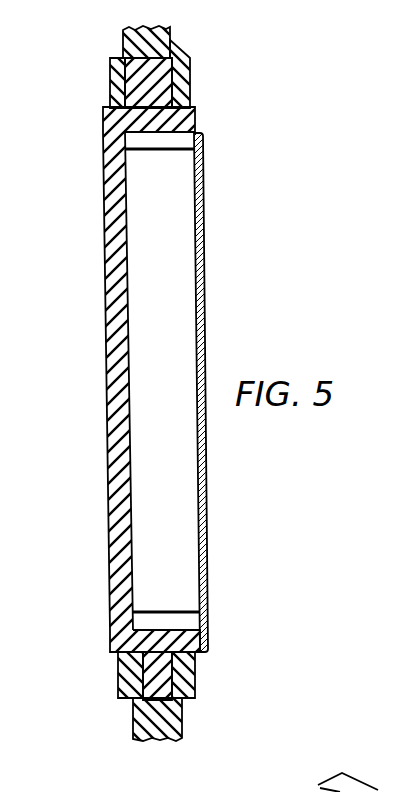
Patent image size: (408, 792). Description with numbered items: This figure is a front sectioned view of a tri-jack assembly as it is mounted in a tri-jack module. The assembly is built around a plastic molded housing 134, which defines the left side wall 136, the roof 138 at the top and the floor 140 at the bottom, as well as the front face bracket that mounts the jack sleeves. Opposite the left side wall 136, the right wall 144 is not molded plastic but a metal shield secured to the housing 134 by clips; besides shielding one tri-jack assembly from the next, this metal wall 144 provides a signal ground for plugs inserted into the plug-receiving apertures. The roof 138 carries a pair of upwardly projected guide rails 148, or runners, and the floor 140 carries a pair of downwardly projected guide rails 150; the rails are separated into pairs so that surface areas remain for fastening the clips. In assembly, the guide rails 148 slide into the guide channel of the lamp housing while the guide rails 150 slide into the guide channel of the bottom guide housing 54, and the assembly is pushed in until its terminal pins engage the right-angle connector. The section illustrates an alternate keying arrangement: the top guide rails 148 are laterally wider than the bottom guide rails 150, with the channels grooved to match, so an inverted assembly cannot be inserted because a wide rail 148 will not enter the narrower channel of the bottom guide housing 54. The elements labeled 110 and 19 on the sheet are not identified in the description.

The upper end stub 110 is at (122, 38).
The upwardly projected guide rails 148 is at (168, 52).
The roof 138 is at (196, 122).
The plastic molded housing 134 is at (103, 218).
The left side wall 136 is at (103, 251).
The right wall 144 is at (204, 291).
The floor 140 is at (204, 642).
The downwardly projected guide rails 150 is at (133, 715).
The bottom guide housing 54 is at (182, 730).
The adjacent element (partial) 19 is at (375, 788).